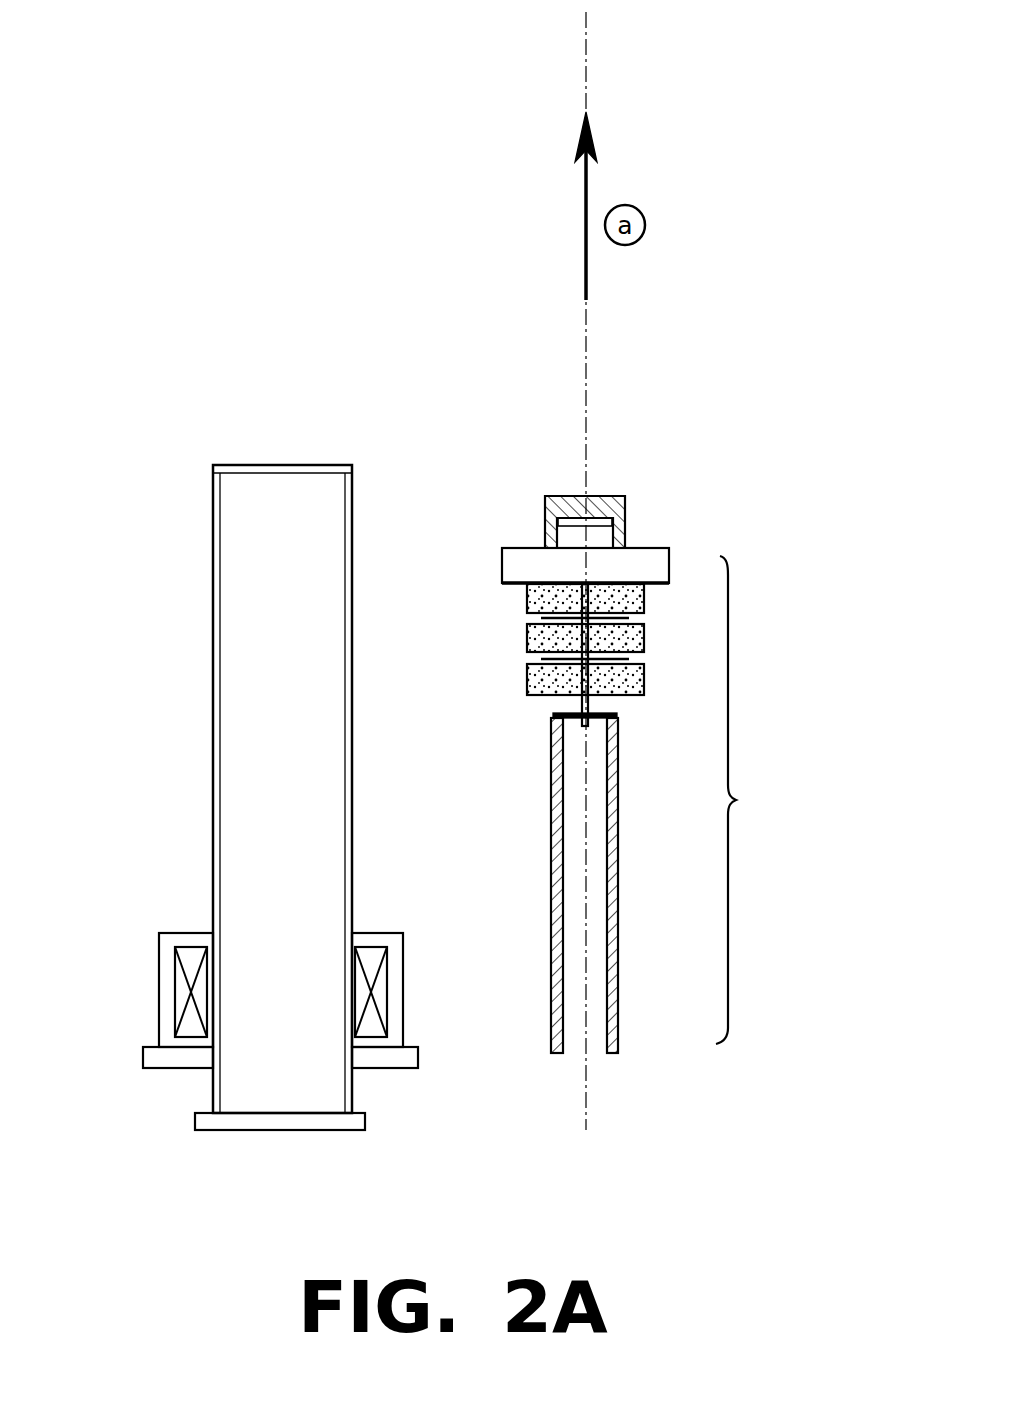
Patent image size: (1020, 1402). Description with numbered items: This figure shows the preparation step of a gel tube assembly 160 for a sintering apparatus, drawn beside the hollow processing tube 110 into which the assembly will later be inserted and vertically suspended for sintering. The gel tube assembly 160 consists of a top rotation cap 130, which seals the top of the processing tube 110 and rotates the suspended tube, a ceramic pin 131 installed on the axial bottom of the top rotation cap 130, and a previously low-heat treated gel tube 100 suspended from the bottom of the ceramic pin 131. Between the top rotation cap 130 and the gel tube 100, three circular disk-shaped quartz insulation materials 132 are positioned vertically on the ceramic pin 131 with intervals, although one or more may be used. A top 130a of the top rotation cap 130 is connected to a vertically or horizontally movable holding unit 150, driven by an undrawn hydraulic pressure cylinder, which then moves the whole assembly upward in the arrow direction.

The gel tube 100 is at (618, 878).
The hollow processing tube 110 is at (212, 731).
The top rotation cap 130 is at (513, 563).
The top of the top rotation cap 130a is at (572, 531).
The ceramic pin 131 is at (592, 702).
The quartz insulation material 132 is at (527, 598).
The movable holding unit 150 is at (608, 501).
The gel tube assembly 160 is at (757, 800).